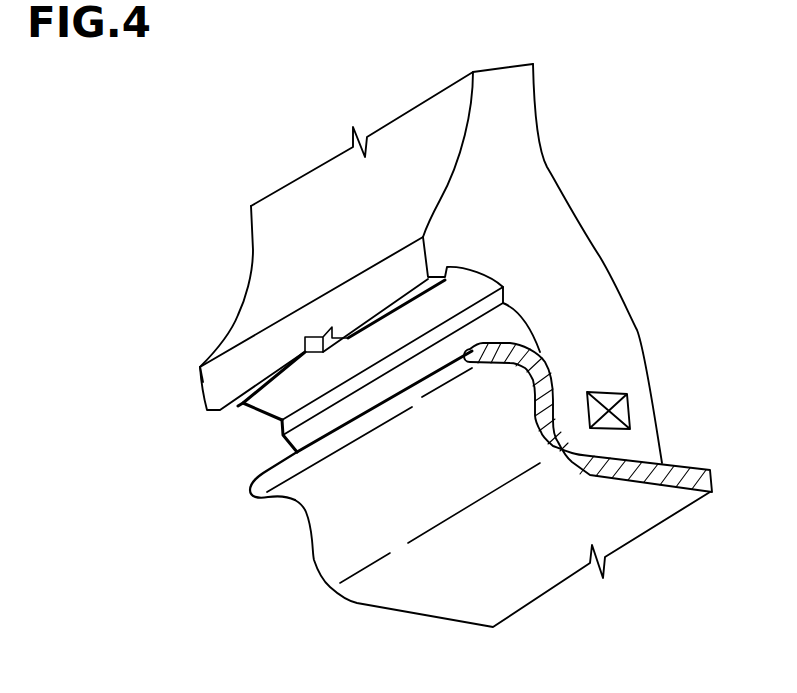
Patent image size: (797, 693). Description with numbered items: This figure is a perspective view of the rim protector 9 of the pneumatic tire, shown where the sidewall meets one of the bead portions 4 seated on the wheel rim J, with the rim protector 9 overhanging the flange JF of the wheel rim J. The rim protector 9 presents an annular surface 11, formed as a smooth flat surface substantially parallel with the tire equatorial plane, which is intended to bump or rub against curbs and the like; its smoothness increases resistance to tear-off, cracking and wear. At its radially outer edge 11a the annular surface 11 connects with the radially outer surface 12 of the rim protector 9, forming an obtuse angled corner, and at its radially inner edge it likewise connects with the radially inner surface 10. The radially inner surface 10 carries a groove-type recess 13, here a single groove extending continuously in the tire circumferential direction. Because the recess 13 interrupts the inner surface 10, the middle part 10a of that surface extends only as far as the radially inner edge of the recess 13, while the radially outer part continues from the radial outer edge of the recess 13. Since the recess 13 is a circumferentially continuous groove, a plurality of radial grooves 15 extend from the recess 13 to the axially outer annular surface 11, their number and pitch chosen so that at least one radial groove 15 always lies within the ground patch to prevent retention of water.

The bead portion 4 is at (633, 270).
The rim protector 9 is at (196, 358).
The radially inner surface 10 is at (268, 404).
The middle part 10a is at (228, 412).
The annular surface 11 is at (210, 380).
The radially outer edge 11a is at (257, 332).
The radially outer surface 12 is at (267, 287).
The recess 13 is at (278, 440).
The radial groove 15 is at (307, 337).
The wheel rim J is at (543, 570).
The flange JF is at (323, 523).